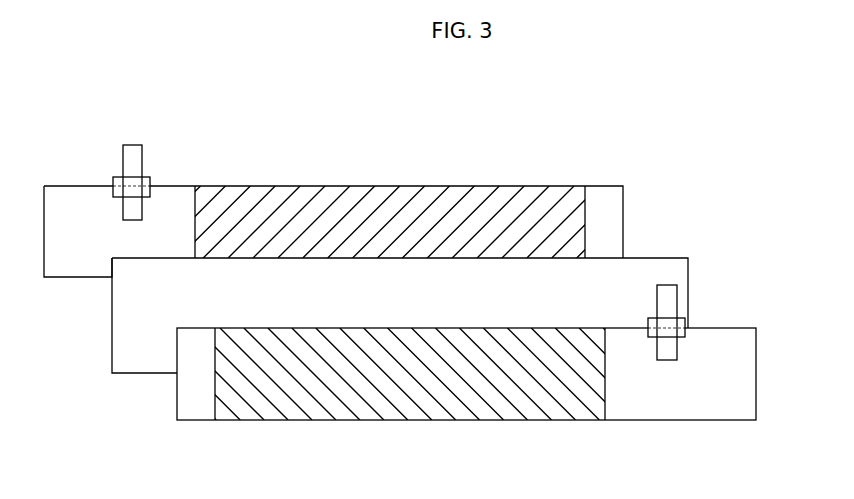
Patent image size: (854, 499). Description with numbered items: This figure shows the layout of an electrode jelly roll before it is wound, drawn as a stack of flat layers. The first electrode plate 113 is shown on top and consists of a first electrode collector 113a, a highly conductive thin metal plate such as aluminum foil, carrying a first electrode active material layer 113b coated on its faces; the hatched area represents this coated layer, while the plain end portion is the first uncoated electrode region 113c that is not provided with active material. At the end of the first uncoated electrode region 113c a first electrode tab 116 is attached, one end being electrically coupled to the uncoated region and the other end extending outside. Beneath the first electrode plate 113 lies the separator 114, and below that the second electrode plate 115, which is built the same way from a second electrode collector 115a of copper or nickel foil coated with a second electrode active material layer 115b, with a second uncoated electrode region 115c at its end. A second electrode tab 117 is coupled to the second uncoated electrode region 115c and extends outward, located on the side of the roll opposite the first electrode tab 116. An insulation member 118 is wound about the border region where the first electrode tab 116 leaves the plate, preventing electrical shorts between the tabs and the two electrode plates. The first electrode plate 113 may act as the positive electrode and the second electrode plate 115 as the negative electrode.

The first electrode plate 113 is at (365, 200).
The first electrode collector 113a is at (412, 186).
The first electrode active material layer 113b is at (320, 206).
The first uncoated electrode region 113c is at (60, 245).
The separator 114 is at (701, 253).
The second electrode plate 115 is at (479, 371).
The second electrode collector 115a is at (462, 421).
The second electrode active material layer 115b is at (356, 402).
The second uncoated electrode region 115c is at (736, 395).
The first electrode tab 116 is at (131, 145).
The second electrode tab 117 is at (669, 307).
The insulation member 118 is at (113, 183).